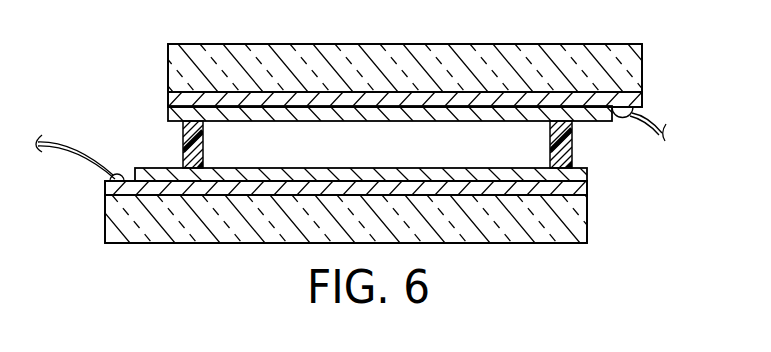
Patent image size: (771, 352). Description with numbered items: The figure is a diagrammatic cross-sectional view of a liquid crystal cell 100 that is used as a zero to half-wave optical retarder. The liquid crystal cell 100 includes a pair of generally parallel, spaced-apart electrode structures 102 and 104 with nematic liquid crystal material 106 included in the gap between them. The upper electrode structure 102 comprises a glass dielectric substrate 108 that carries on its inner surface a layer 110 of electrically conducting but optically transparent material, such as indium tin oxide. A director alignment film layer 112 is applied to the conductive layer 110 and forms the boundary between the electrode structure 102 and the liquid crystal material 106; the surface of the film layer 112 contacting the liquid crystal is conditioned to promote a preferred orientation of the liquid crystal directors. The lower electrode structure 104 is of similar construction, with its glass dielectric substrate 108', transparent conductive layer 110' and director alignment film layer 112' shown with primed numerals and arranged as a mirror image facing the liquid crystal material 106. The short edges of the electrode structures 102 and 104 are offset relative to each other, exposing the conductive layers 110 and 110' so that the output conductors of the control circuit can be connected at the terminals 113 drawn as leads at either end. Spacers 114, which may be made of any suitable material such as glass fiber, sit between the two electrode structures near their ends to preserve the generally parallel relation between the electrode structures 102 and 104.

The liquid crystal cell 100 is at (96, 252).
The electrode structure 102 is at (166, 64).
The electrode structure 104 is at (215, 246).
The glass dielectric substrate 108 is at (411, 50).
The glass dielectric substrate 108' is at (342, 219).
The electrically conducting layer 110 is at (376, 85).
The electrically conducting layer 110' is at (310, 181).
The director alignment film layer 112 is at (376, 107).
The director alignment film layer 112' is at (356, 152).
The nematic liquid crystal material 106 is at (408, 156).
The terminals 113 is at (642, 134).
The spacers 114 is at (203, 153).